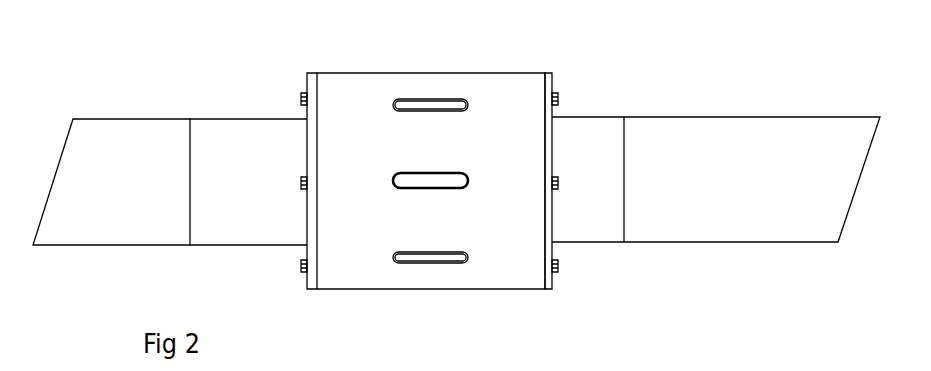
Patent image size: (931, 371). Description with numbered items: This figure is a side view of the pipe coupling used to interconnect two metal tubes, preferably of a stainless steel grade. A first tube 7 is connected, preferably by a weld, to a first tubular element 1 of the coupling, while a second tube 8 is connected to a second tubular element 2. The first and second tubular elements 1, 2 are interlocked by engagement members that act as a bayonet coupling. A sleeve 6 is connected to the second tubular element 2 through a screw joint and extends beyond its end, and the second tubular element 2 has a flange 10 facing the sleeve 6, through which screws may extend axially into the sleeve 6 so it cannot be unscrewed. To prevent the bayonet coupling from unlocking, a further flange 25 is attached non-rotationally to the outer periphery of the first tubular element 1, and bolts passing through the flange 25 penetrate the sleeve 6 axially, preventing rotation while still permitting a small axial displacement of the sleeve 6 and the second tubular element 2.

The first tubular element 1 is at (245, 140).
The second tubular element 2 is at (595, 133).
The sleeve 6 is at (489, 80).
The first tube 7 is at (124, 137).
The second tube 8 is at (695, 135).
The flange 10 is at (549, 83).
The flange 25 is at (313, 90).